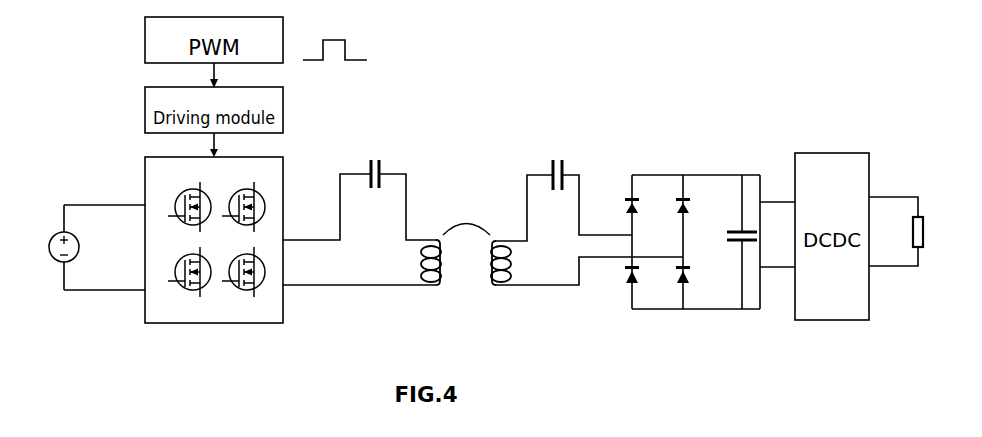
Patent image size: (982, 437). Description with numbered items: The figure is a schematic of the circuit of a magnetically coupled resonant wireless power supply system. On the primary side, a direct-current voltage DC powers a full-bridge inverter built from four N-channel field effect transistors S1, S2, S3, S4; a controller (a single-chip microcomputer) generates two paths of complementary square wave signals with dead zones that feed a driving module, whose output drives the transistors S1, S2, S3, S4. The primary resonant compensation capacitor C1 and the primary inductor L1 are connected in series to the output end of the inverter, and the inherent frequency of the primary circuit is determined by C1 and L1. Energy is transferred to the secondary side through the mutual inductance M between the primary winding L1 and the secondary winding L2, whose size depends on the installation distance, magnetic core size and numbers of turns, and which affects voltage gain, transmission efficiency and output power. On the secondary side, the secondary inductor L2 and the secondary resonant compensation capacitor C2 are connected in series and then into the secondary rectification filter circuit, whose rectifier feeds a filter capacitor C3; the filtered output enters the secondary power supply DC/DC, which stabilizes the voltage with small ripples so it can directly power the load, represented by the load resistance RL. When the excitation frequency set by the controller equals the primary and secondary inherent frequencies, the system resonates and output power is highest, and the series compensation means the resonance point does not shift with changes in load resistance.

The direct-current voltage DC is at (53, 247).
The first switch transistor of inverter S1 is at (184, 212).
The second switch transistor of inverter S2 is at (184, 275).
The third switch transistor of inverter S3 is at (241, 212).
The fourth switch transistor of inverter S4 is at (241, 275).
The primary resonant compensation capacitor C1 is at (375, 187).
The primary inductor L1 is at (441, 262).
The mutual inductance M is at (466, 219).
The secondary inductor L2 is at (490, 263).
The secondary resonant compensation capacitor C2 is at (553, 186).
The filter capacitor C3 is at (727, 242).
The load resistor RL is at (907, 231).